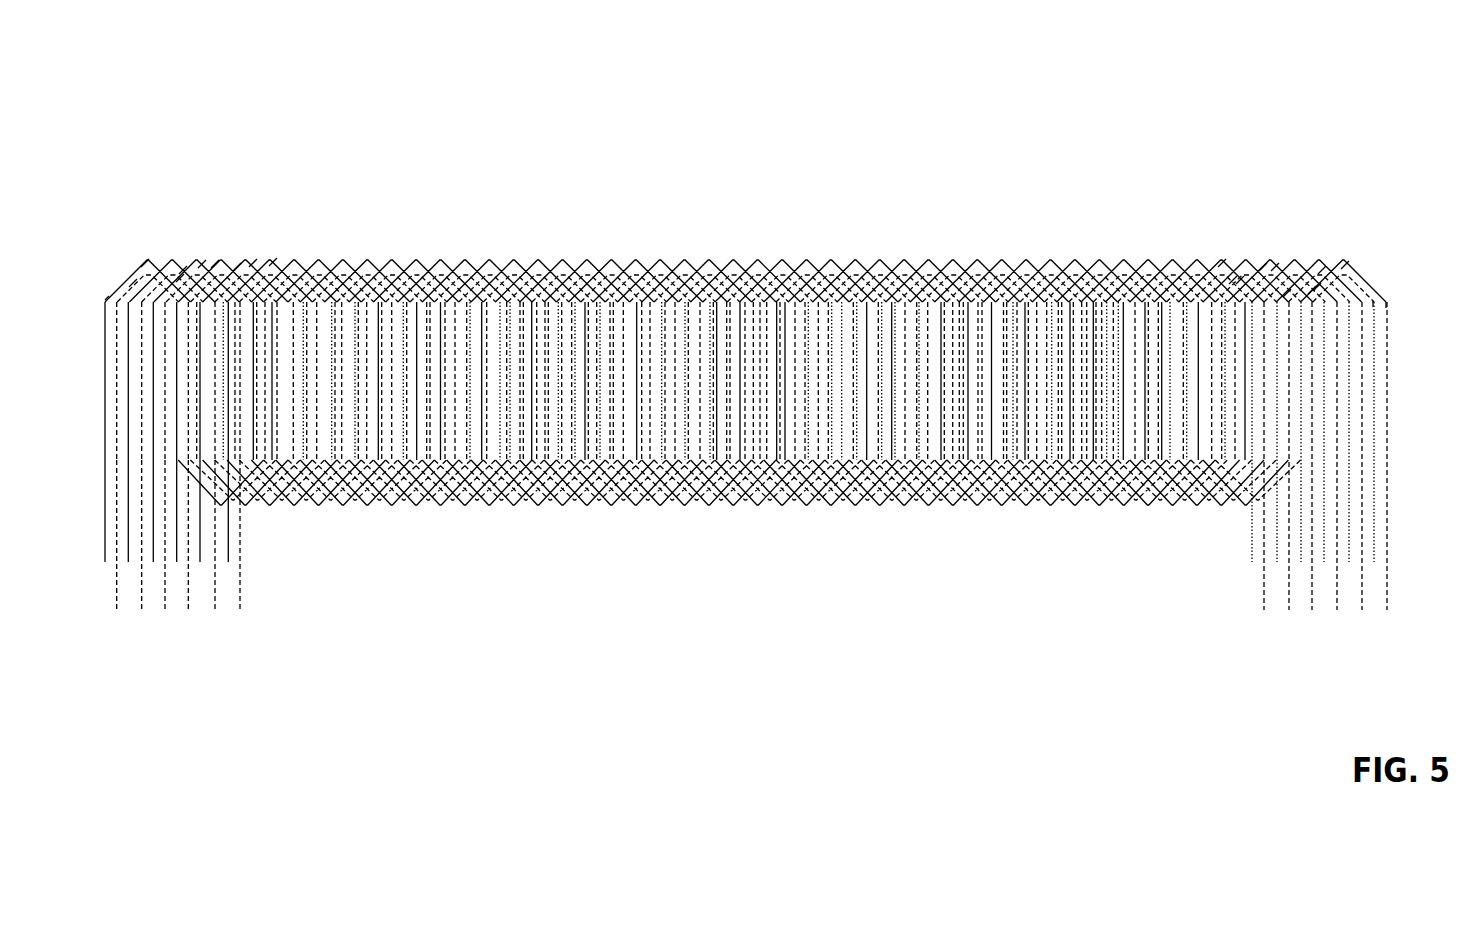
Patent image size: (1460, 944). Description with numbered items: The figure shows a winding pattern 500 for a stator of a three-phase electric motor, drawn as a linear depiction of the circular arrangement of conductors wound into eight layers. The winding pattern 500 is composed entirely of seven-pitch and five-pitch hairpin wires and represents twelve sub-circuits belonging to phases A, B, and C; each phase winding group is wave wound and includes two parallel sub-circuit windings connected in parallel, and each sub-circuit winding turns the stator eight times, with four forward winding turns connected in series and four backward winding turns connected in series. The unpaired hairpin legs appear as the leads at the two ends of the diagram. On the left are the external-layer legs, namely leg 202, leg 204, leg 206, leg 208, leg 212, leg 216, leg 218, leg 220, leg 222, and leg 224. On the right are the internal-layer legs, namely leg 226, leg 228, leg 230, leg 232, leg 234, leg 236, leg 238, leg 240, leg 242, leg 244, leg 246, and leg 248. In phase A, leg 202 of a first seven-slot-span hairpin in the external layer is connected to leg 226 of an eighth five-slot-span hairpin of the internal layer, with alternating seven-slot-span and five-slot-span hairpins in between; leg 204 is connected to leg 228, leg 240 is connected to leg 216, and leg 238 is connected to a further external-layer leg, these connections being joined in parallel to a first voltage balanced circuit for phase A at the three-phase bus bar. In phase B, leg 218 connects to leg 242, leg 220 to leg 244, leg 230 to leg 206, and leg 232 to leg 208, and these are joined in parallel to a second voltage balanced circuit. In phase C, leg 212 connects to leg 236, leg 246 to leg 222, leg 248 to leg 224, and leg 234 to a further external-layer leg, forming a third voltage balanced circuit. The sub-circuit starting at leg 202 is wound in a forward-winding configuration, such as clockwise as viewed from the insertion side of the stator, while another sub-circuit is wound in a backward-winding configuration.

The winding pattern 500 is at (263, 88).
The leg 202 is at (145, 263).
The leg 204 is at (113, 298).
The leg 206 is at (183, 270).
The leg 208 is at (133, 283).
The leg 212 is at (180, 277).
The leg 216 is at (202, 263).
The leg 218 is at (237, 267).
The leg 220 is at (215, 263).
The leg 222 is at (273, 262).
The leg 224 is at (253, 263).
The leg 226 is at (1233, 280).
The leg 228 is at (1222, 263).
The leg 230 is at (1263, 267).
The leg 232 is at (1240, 280).
The leg 234 is at (1287, 293).
The leg 236 is at (1275, 267).
The leg 238 is at (1317, 287).
The leg 240 is at (1312, 290).
The leg 242 is at (1377, 307).
The leg 244 is at (1322, 270).
The leg 246 is at (1388, 308).
The leg 248 is at (1345, 265).